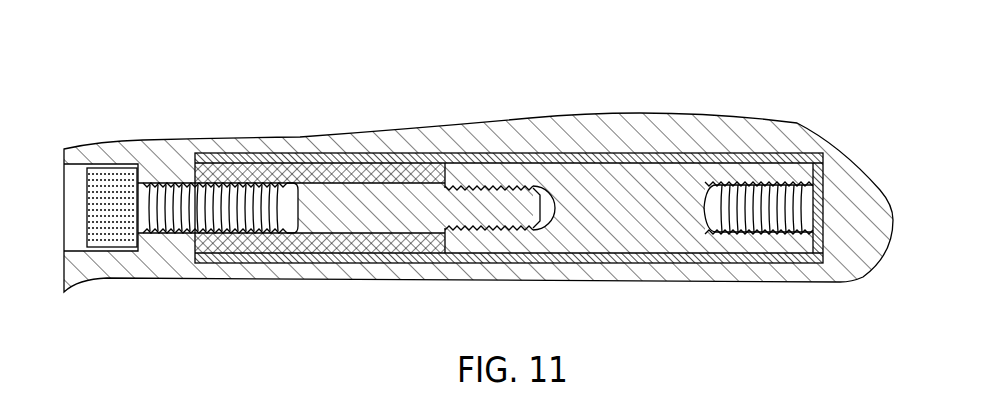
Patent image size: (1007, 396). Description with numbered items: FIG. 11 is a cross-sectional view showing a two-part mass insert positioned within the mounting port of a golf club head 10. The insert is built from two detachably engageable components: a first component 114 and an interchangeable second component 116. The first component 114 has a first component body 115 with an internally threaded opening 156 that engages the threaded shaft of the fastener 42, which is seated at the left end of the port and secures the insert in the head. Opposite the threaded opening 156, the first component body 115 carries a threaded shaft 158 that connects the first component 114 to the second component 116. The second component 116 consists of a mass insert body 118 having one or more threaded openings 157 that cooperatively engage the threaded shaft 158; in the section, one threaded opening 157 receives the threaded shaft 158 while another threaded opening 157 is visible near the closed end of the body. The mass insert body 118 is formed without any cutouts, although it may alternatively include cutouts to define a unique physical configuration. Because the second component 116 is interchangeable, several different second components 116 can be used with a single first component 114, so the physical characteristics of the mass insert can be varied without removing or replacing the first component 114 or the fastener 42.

The handle body 10 is at (797, 124).
The fastener 42 is at (103, 251).
The first component 114 is at (343, 150).
The first component body 115 is at (367, 223).
The second component 116 is at (672, 153).
The mass insert body 118 is at (643, 223).
The internally threaded opening 156 is at (303, 225).
The threaded openings 157 is at (538, 185).
The threaded shaft 158 is at (482, 207).